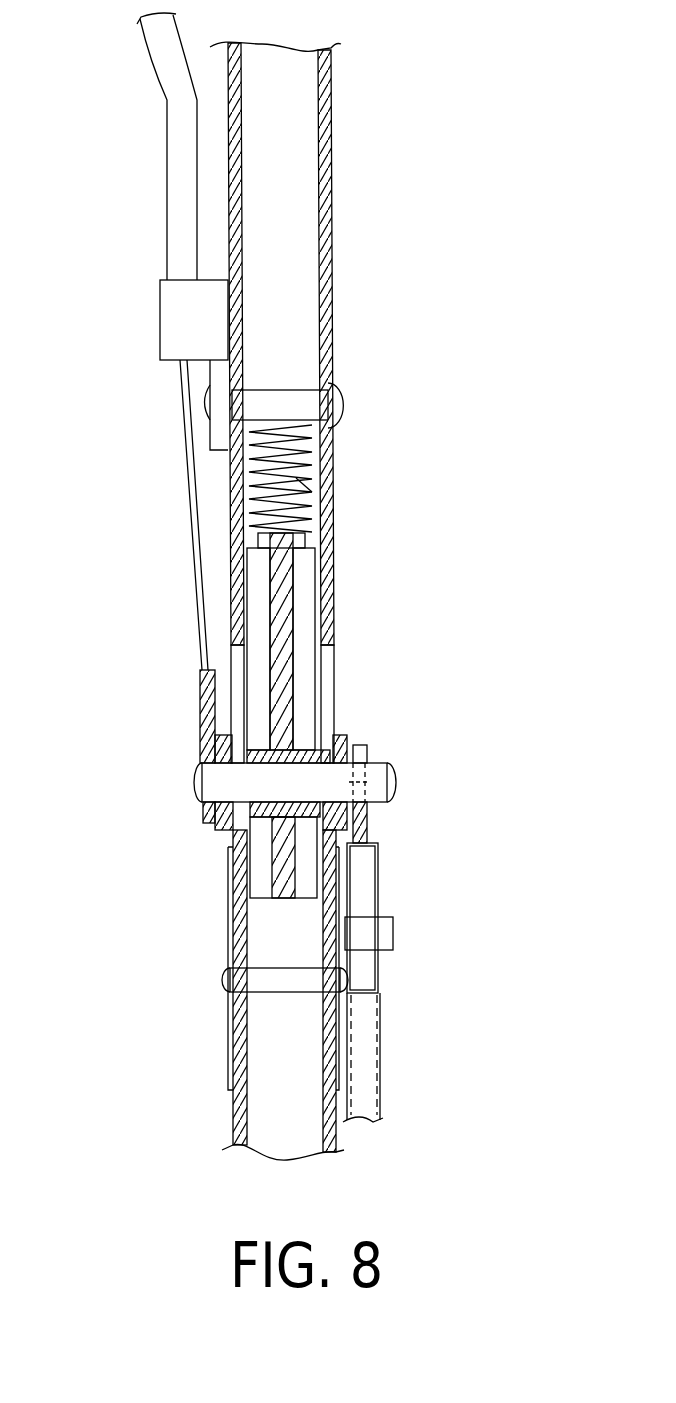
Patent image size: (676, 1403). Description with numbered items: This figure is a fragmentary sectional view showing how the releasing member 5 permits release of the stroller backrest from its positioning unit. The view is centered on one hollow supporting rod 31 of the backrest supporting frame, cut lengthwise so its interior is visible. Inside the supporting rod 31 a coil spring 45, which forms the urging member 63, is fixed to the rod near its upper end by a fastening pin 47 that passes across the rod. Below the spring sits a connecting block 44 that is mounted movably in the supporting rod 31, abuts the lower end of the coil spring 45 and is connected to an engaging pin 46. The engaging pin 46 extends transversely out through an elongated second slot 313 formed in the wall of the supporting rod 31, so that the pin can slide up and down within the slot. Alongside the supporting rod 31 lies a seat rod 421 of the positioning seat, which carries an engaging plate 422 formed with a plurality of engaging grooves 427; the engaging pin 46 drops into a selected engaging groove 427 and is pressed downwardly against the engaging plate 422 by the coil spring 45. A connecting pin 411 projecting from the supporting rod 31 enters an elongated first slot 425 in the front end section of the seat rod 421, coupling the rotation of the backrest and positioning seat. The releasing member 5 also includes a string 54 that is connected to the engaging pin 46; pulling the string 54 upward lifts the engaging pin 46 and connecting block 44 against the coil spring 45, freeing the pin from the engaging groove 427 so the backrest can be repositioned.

The supporting rod 31 is at (332, 273).
The second slot 313 is at (325, 667).
The fastening pin 47 is at (313, 405).
The coil spring 45 is at (305, 452).
The urging member 63 is at (308, 487).
The connecting block 44 is at (293, 588).
The string 54 is at (190, 465).
The releasing member 5 is at (182, 688).
The engaging pin 46 is at (327, 785).
The engaging groove 427 is at (393, 763).
The engaging plate 422 is at (359, 744).
The seat rod 421 is at (379, 881).
The connecting pin 411 is at (394, 948).
The first slot 425 is at (381, 1065).